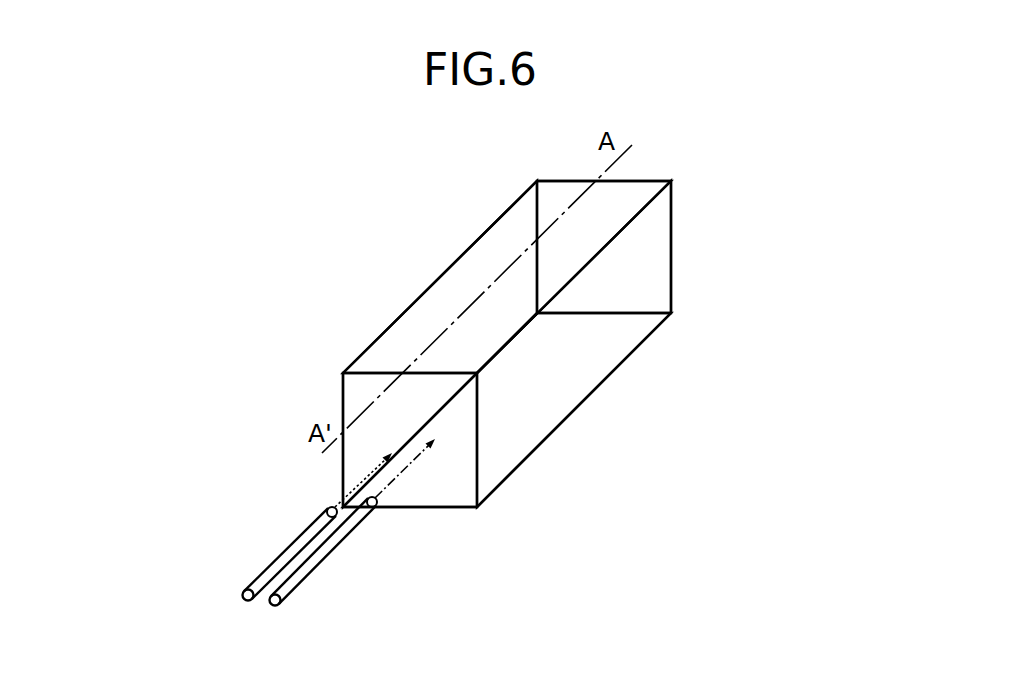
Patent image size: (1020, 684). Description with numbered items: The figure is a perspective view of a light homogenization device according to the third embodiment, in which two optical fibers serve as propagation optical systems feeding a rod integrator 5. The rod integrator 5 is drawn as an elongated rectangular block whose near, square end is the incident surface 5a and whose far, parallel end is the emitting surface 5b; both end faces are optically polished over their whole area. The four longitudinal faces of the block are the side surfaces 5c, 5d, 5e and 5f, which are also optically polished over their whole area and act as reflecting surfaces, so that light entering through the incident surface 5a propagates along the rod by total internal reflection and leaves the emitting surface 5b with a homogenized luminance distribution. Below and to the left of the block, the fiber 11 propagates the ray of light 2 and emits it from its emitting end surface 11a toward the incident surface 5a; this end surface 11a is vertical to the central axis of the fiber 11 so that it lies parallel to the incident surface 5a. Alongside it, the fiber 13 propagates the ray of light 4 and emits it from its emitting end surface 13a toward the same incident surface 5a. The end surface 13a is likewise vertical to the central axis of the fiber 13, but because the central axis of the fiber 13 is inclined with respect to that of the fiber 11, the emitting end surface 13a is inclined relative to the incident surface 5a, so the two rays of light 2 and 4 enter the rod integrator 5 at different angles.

The ray of light 2 is at (360, 485).
The ray of light 4 is at (402, 475).
The rod integrator 5 is at (545, 373).
The incident surface 5a is at (453, 490).
The emitting surface 5b is at (648, 260).
The side surface 5c is at (598, 353).
The side surface 5d is at (492, 250).
The side surface 5e is at (420, 320).
The side surface 5f is at (532, 418).
The fiber 11 is at (274, 542).
The emitting end surface 11a is at (330, 507).
The fiber 13 is at (343, 565).
The emitting end surface 13a is at (378, 508).